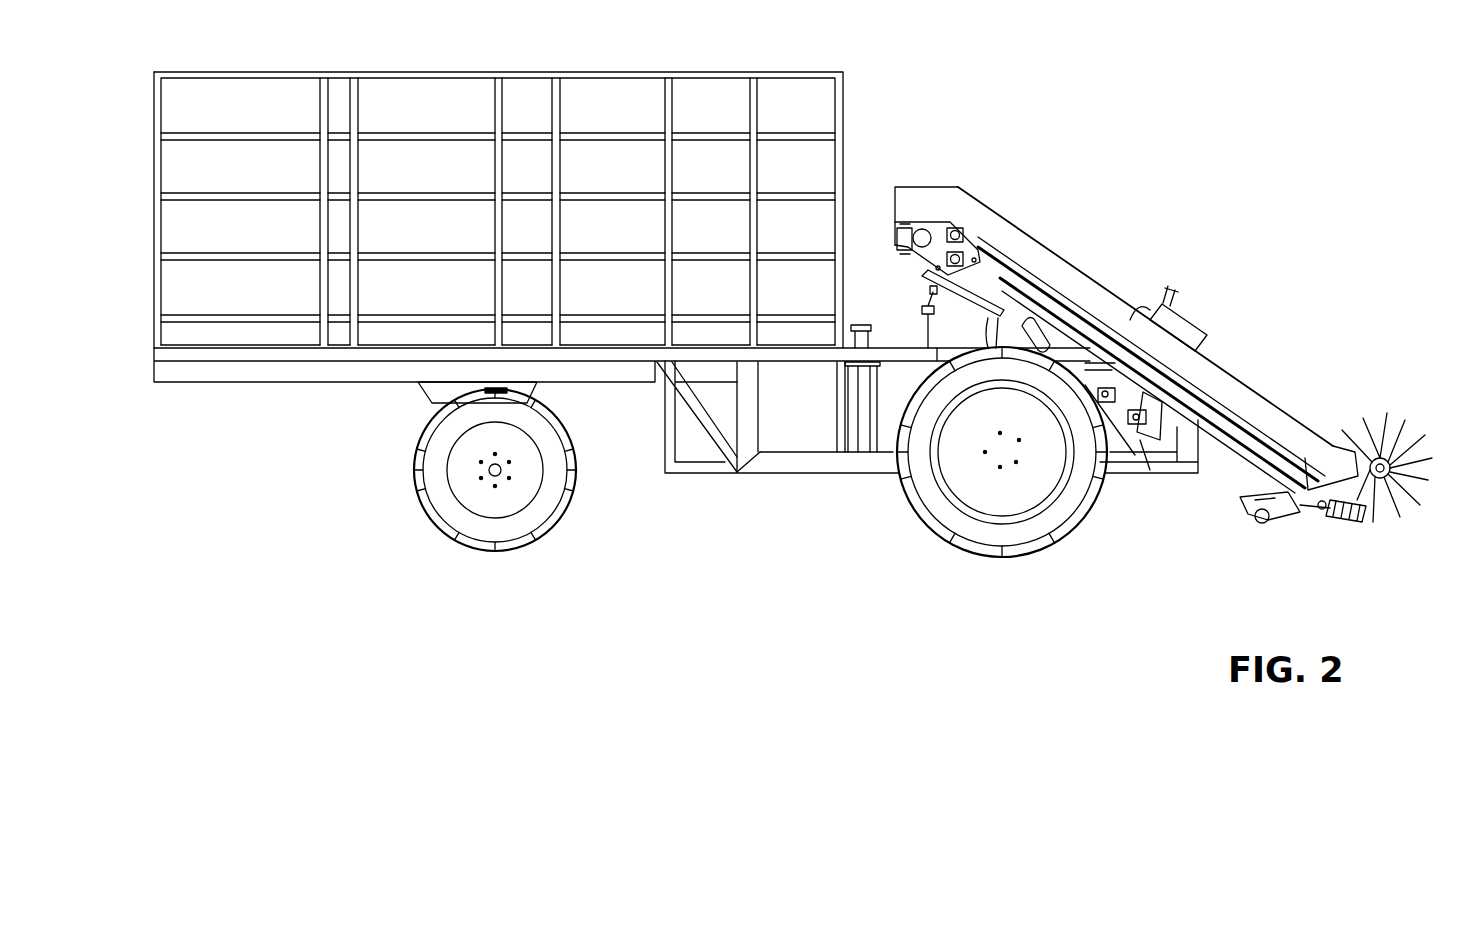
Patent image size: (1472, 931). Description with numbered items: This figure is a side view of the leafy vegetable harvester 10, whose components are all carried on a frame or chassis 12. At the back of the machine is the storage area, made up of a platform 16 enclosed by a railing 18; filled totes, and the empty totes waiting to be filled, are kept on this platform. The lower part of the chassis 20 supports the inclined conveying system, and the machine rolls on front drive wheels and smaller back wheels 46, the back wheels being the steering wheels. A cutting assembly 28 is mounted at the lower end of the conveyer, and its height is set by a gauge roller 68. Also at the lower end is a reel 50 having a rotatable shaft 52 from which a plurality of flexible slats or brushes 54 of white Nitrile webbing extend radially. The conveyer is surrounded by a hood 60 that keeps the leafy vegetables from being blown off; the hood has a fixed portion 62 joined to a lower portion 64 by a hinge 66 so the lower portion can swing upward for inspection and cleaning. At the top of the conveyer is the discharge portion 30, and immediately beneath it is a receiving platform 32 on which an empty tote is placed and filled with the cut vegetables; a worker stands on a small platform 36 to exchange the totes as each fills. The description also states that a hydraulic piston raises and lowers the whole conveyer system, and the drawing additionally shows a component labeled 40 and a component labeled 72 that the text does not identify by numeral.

The leafy vegetable harvester 10 is at (906, 112).
The frame or chassis 12 is at (638, 386).
The platform 16 is at (418, 345).
The railing 18 is at (153, 236).
The lower part of the chassis 20 is at (785, 474).
The cutting assembly 28 is at (1360, 520).
The discharge portion 30 is at (913, 186).
The receiving platform 32 is at (905, 347).
The small platform 36 is at (790, 448).
The guide bracket 40 is at (1173, 300).
The back wheels 46 is at (438, 528).
The reel 50 is at (1410, 414).
The rotatable shaft 52 is at (1413, 464).
The slats or brushes 54 is at (1385, 420).
The hood 60 is at (1076, 258).
The fixed portion 62 is at (983, 200).
The lower portion 64 is at (1223, 370).
The hinge 66 is at (1023, 228).
The gauge roller 68 is at (1262, 526).
The hydraulic cylinder 72 is at (1160, 440).